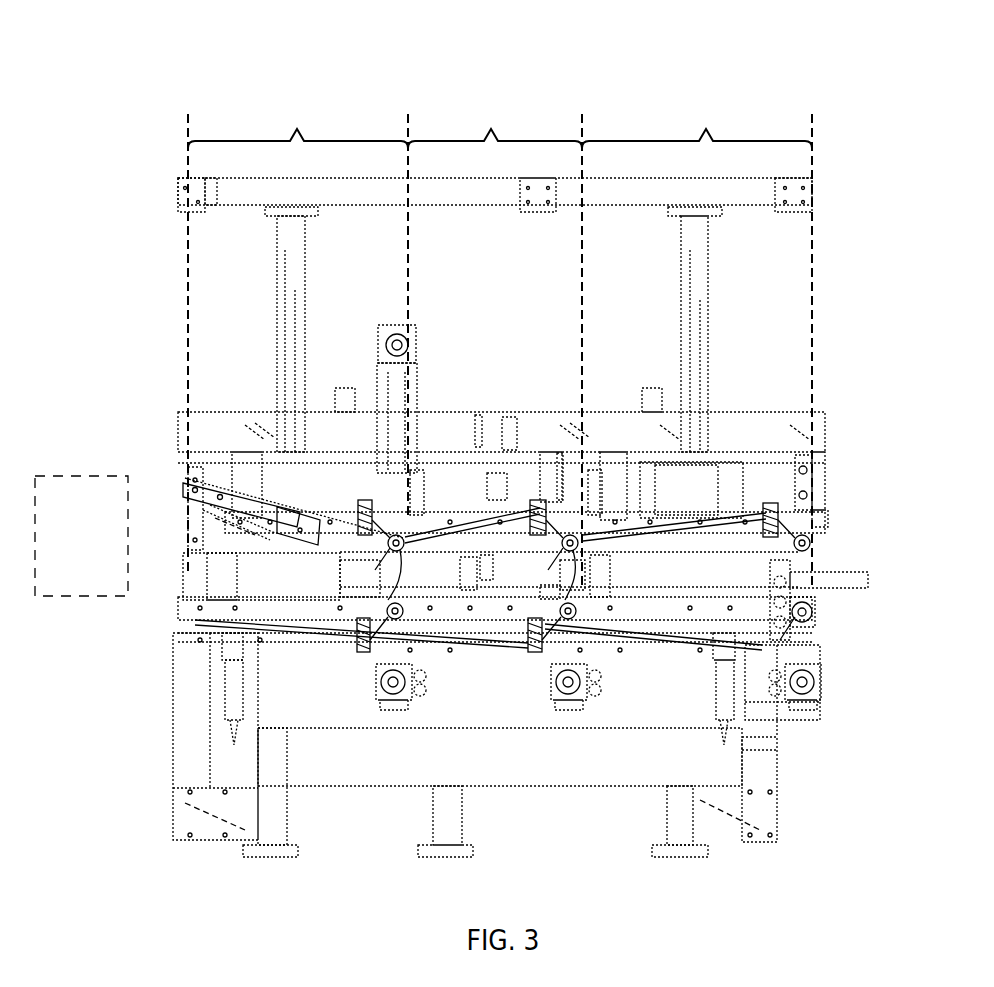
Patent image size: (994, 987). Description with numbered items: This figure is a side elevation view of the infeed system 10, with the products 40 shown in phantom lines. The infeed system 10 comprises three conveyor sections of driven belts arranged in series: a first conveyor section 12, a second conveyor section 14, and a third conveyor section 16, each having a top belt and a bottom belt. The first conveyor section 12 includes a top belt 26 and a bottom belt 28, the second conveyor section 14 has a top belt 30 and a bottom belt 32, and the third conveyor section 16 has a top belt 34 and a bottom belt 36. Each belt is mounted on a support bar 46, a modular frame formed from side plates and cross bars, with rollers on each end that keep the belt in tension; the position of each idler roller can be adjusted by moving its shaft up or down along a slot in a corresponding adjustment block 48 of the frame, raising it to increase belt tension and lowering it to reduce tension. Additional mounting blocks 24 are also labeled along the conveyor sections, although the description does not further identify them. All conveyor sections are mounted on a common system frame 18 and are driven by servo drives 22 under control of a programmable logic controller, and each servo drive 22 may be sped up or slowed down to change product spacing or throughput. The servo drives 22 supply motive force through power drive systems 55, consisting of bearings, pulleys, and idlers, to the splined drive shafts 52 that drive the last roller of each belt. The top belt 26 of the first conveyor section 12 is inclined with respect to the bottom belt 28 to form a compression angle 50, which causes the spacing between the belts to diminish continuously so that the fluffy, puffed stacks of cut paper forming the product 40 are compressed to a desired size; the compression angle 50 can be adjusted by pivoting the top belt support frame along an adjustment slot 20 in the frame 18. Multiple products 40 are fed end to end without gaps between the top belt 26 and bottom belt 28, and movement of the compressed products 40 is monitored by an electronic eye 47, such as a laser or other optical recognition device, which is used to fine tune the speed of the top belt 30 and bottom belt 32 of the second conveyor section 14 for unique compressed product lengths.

The infeed system 10 is at (198, 46).
The first conveyor section 12 is at (298, 124).
The second conveyor section 14 is at (495, 124).
The third conveyor section 16 is at (848, 740).
The system frame 18 is at (690, 243).
The adjustment slot 20 is at (200, 467).
The servo drive 22 is at (393, 695).
The guide block 24 is at (417, 487).
The top belt 26 is at (233, 507).
The bottom belt 28 is at (244, 630).
The top belt 30 is at (488, 595).
The bottom belt 32 is at (483, 620).
The top belt 34 is at (690, 548).
The bottom belt 36 is at (675, 630).
The product 40 is at (92, 487).
The support bar 46 is at (222, 505).
The electronic eye 47 is at (547, 590).
The adjustment block 48 is at (367, 497).
The compression angle 50 is at (288, 515).
The drive shaft 52 is at (807, 547).
The power drive system 55 is at (522, 513).